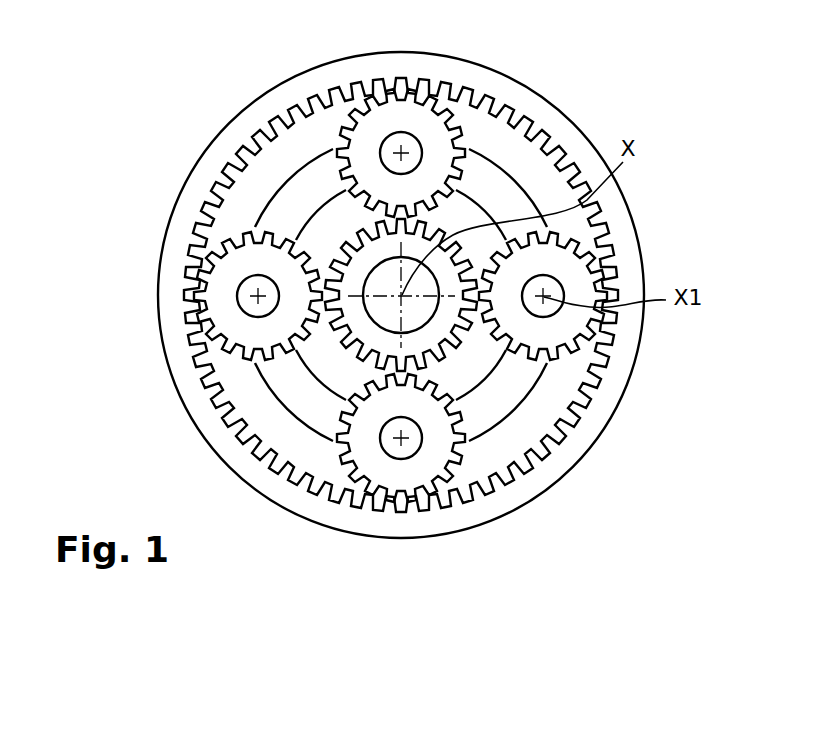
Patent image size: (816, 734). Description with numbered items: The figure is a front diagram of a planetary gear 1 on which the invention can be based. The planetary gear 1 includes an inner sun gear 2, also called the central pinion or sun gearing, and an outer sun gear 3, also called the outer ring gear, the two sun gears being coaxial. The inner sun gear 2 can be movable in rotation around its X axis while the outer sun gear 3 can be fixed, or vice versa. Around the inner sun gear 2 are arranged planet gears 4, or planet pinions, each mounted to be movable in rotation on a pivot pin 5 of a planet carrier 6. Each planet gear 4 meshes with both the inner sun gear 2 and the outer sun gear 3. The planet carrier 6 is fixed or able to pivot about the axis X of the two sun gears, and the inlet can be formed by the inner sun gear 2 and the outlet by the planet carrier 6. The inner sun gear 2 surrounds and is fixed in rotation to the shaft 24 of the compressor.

The planetary gear 1 is at (607, 106).
The inner sun gear 2 is at (363, 330).
The outer sun gear 3 is at (527, 487).
The planet gear 4 is at (365, 142).
The pivot pin 5 is at (412, 143).
The planet carrier 6 is at (478, 408).
The shaft 24 is at (421, 308).